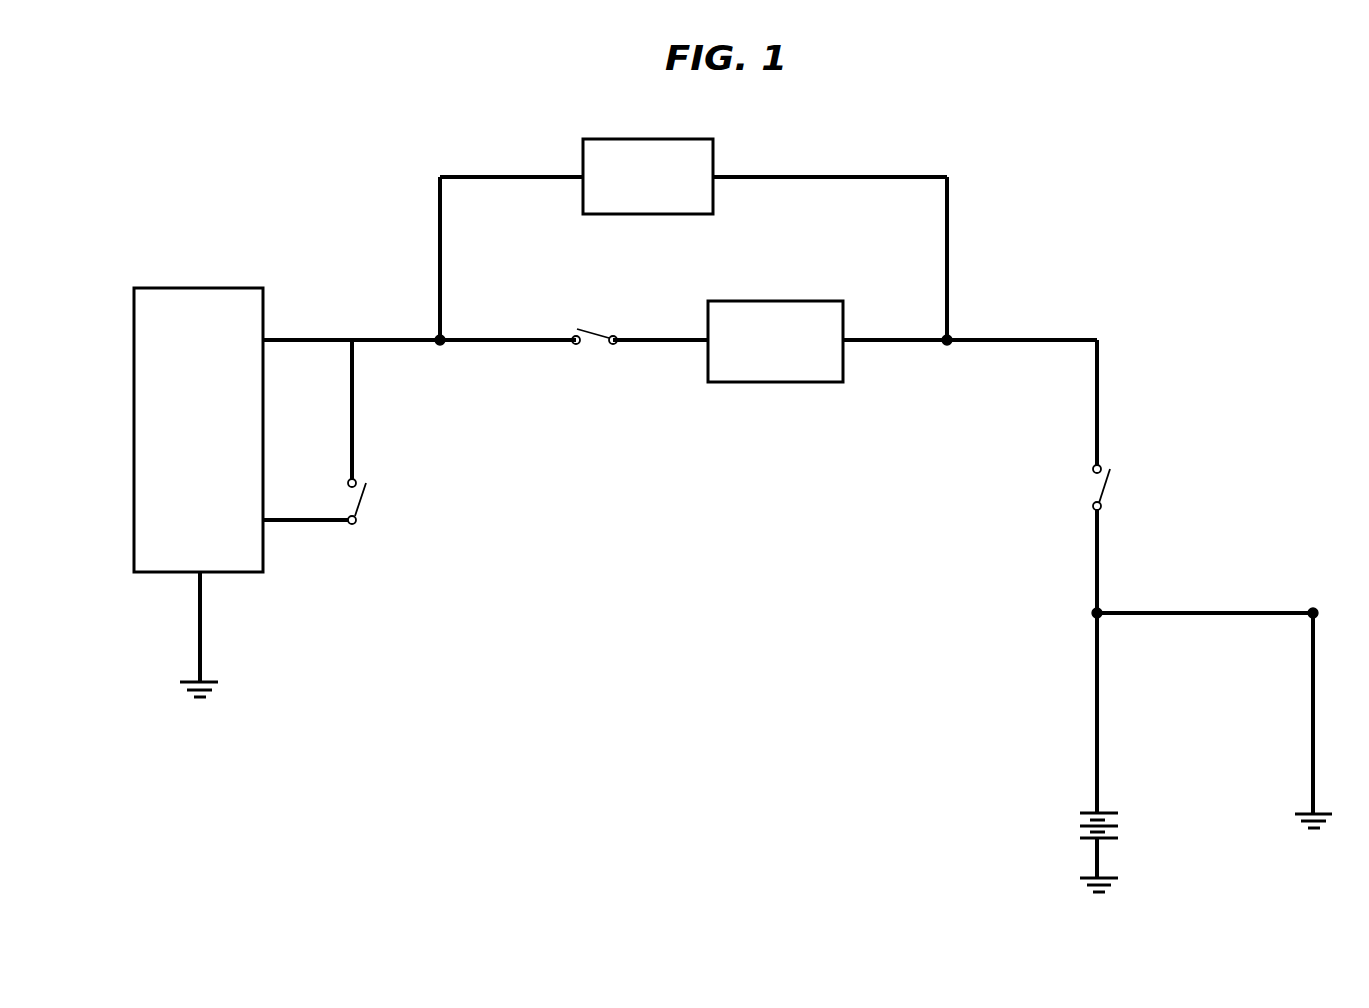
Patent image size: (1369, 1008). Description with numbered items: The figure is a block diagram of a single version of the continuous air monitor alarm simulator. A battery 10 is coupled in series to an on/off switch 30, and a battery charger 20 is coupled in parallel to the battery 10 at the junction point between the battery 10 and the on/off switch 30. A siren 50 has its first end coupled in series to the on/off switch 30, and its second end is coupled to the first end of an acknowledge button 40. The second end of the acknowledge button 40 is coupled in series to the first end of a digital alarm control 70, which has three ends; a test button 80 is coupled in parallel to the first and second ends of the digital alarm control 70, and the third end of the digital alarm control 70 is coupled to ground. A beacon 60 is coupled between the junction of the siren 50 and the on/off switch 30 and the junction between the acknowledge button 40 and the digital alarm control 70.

The battery 10 is at (1106, 841).
The battery charger 20 is at (1313, 613).
The on/off switch 30 is at (1104, 484).
The acknowledge button 40 is at (590, 333).
The siren 50 is at (770, 300).
The beacon 60 is at (713, 160).
The digital alarm control 70 is at (198, 288).
The test button 80 is at (364, 504).